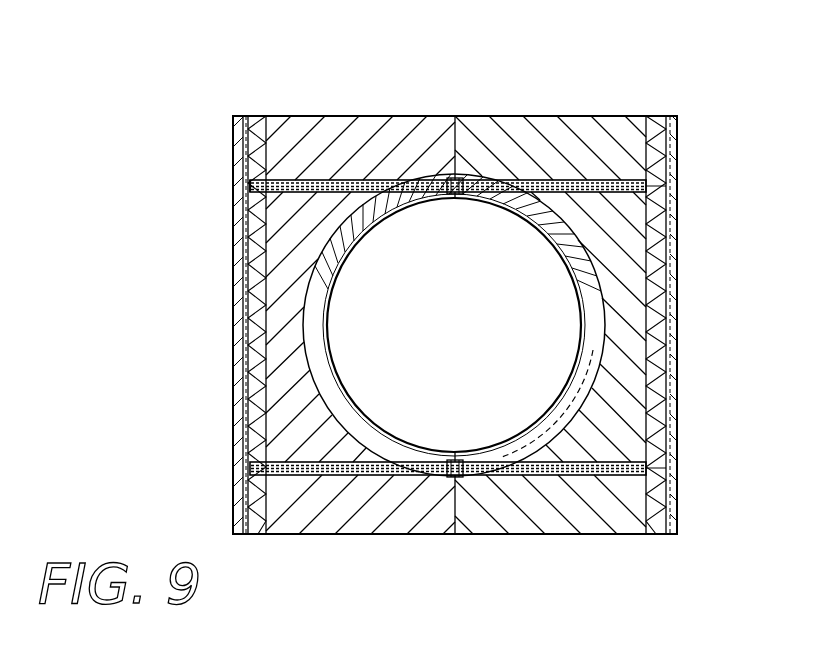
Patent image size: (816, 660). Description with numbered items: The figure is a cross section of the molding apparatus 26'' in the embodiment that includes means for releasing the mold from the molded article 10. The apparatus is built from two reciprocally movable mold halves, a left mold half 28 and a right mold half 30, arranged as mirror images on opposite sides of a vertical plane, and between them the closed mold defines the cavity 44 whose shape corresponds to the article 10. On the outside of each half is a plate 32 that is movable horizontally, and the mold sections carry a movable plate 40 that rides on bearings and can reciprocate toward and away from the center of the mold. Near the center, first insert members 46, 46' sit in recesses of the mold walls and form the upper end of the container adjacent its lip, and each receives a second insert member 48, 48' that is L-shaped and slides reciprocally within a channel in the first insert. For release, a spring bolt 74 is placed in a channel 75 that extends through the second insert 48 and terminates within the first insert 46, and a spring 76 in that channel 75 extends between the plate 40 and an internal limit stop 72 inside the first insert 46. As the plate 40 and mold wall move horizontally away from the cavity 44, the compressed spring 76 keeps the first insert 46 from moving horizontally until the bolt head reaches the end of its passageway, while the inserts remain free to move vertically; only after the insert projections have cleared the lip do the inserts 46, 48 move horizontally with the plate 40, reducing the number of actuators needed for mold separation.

The molding apparatus 26'' is at (449, 267).
The left mold half 28 is at (275, 113).
The right mold half 30 is at (590, 116).
The plate 32 is at (240, 376).
The movable plate 40 is at (277, 422).
The cavity 44 is at (512, 365).
The first insert member 46 is at (378, 249).
The first insert member 46' is at (527, 315).
The second insert member 48 is at (300, 325).
The second insert member 48' is at (604, 325).
The article 10 is at (337, 292).
The internal limit stop 72 is at (433, 178).
The spring bolt 74 is at (377, 180).
The channel 75 is at (262, 200).
The spring 76 is at (297, 180).